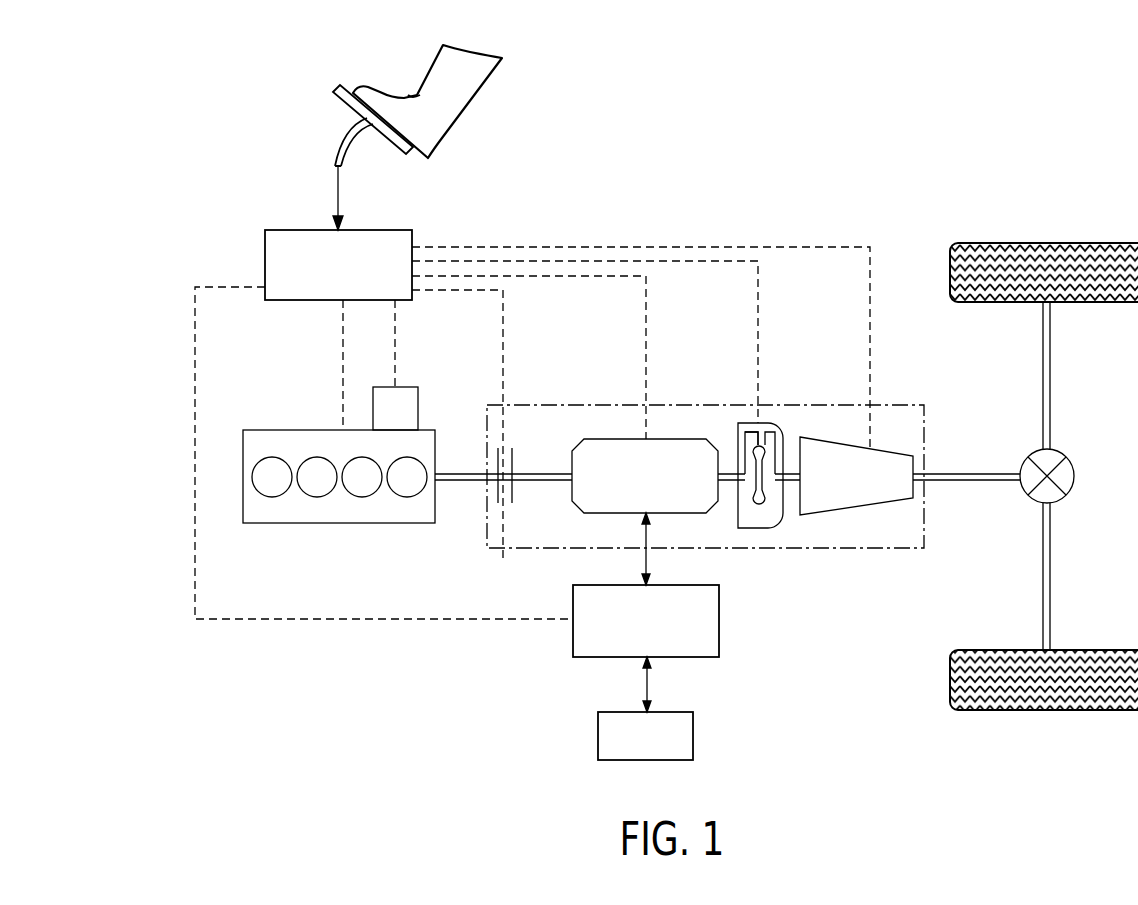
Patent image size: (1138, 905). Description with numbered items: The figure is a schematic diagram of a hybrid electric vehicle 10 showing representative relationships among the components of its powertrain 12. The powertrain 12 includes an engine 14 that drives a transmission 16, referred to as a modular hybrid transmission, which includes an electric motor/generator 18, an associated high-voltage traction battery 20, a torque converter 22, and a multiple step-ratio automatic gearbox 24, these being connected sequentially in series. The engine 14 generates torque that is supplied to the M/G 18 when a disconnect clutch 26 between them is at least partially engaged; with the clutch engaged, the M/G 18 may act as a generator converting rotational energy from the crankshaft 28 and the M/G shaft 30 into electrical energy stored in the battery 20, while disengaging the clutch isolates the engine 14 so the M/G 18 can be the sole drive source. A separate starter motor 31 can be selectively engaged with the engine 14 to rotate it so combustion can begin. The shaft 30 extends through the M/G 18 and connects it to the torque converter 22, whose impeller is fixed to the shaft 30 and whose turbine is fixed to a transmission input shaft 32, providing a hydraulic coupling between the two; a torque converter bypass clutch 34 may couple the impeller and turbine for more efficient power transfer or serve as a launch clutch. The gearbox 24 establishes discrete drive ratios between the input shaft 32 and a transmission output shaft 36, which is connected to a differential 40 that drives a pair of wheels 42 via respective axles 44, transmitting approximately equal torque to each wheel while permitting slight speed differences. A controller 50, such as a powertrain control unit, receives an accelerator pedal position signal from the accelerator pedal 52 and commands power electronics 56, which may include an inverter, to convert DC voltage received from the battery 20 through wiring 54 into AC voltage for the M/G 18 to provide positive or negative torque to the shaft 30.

The hybrid electric vehicle 10 is at (925, 178).
The powertrain 12 is at (458, 632).
The engine 14 is at (300, 430).
The transmission 16 is at (682, 403).
The electric motor/generator 18 is at (623, 438).
The traction battery 20 is at (695, 730).
The torque converter 22 is at (755, 530).
The gearbox 24 is at (847, 512).
The disconnect clutch 26 is at (498, 495).
The crankshaft 28 is at (470, 472).
The M/G shaft 30 is at (548, 471).
The starter motor 31 is at (407, 386).
The transmission input shaft 32 is at (795, 470).
The torque converter bypass clutch 34 is at (759, 422).
The transmission output shaft 36 is at (970, 470).
The differential 40 is at (1074, 476).
The wheels 42 is at (1047, 242).
The axles 44 is at (1052, 390).
The controller 50 is at (300, 230).
The accelerator pedal 52 is at (353, 107).
The wiring 54 is at (645, 675).
The power electronics 56 is at (720, 622).